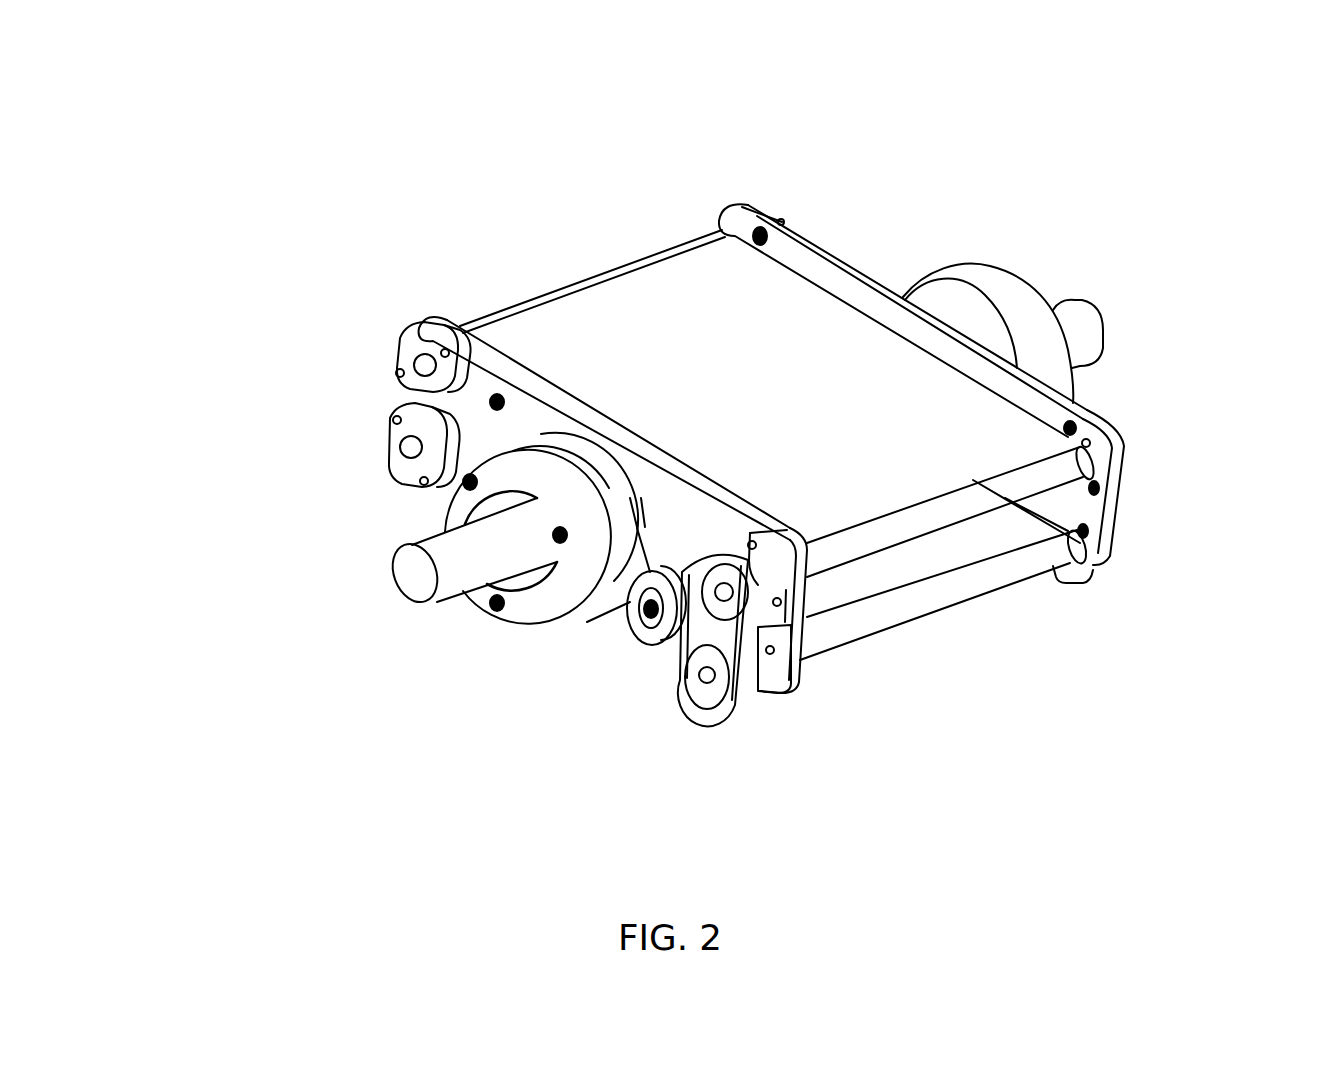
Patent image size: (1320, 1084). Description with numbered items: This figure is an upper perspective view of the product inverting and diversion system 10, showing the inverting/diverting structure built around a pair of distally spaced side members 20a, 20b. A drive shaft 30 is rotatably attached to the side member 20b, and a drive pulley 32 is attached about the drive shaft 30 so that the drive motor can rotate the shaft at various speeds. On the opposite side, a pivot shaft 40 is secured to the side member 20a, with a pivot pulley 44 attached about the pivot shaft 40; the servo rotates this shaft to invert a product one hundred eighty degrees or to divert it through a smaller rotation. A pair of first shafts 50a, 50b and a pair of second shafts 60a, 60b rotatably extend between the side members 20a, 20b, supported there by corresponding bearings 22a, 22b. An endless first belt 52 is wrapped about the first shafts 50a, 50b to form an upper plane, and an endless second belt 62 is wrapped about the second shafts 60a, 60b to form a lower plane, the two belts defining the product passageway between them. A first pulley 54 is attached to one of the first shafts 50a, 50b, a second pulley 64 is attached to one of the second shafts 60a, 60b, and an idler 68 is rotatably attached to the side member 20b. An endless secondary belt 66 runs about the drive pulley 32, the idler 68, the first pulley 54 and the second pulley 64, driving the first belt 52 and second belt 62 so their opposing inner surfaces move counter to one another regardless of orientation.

The product inverting and diversion system 10 is at (1138, 186).
The side member 20a is at (823, 250).
The side member 20b is at (505, 357).
The bearing 22a is at (772, 212).
The bearing 22b is at (387, 428).
The drive shaft 30 is at (433, 597).
The drive pulley 32 is at (553, 603).
The pivot shaft 40 is at (1105, 318).
The pivot pulley 44 is at (992, 264).
The first shaft 50a is at (417, 347).
The first shaft 50b is at (777, 693).
The first belt 52 is at (1093, 560).
The first pulley 54 is at (733, 697).
The second shaft 60a is at (400, 443).
The second shaft 60b is at (707, 707).
The second belt 62 is at (953, 567).
The second pulley 64 is at (710, 710).
The secondary belt 66 is at (613, 593).
The idler 68 is at (653, 630).